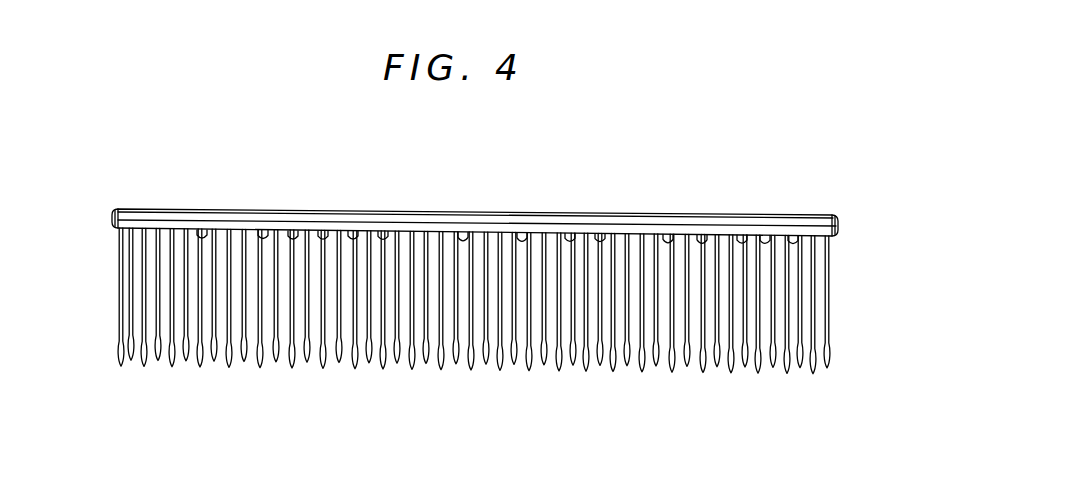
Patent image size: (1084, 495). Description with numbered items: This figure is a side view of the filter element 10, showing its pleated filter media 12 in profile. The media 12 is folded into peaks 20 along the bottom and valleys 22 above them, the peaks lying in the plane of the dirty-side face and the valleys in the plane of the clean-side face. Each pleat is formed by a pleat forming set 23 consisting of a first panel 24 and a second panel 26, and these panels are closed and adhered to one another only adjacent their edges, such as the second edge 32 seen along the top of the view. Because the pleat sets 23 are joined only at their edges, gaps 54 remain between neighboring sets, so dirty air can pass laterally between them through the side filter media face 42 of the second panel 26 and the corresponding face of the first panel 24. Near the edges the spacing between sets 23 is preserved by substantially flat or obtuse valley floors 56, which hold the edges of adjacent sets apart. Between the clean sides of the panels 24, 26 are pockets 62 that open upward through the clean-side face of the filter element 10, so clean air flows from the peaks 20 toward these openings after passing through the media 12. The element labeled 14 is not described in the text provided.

The filter element 10 is at (156, 208).
The pleated filter media 12 is at (113, 281).
The spine 14 is at (244, 212).
The peaks 20 is at (320, 363).
The valleys 22 is at (347, 231).
The pleat forming sets 23 is at (222, 355).
The first panel 24 is at (704, 342).
The second panel 26 is at (686, 342).
The second edge 32 is at (270, 232).
The side filter media face 42 is at (128, 315).
The gaps 54 is at (224, 362).
The valley floors 56 is at (465, 232).
The pockets 62 is at (166, 358).